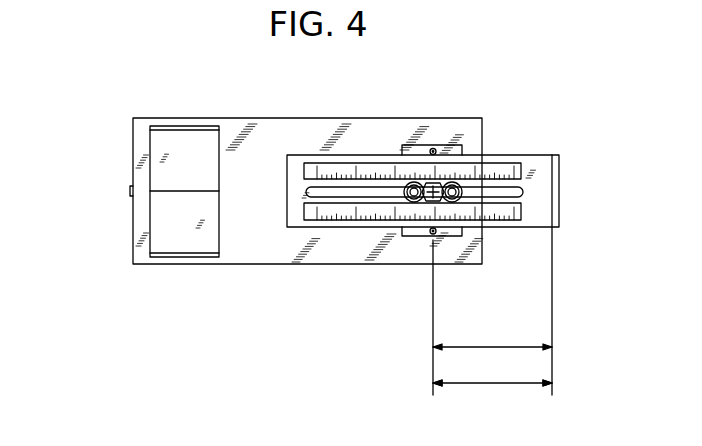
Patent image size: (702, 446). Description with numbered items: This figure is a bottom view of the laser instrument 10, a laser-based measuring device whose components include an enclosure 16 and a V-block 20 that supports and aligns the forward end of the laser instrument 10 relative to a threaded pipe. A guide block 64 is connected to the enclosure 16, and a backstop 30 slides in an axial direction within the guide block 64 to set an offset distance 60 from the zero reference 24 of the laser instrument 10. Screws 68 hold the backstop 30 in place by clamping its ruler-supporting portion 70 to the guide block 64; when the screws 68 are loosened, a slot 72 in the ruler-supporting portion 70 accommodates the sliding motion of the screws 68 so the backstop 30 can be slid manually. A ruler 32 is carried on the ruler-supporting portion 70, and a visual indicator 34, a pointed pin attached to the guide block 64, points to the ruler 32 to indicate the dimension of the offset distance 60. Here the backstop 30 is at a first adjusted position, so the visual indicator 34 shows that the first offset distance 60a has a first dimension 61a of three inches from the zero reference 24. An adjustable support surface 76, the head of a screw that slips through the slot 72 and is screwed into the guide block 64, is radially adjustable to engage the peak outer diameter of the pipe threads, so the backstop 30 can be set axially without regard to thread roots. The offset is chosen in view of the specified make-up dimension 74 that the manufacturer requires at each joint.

The laser instrument 10 is at (120, 84).
The enclosure 16 is at (302, 265).
The V-block 20 is at (219, 229).
The zero reference 24 is at (437, 201).
The backstop 30 is at (552, 207).
The ruler 32 is at (370, 163).
The visual indicator 34 is at (437, 151).
The offset distance 60 is at (495, 386).
The first offset distance 60a is at (457, 386).
The first dimension 61a is at (522, 386).
The guide block 64 is at (422, 238).
The screws 68 is at (409, 201).
The ruler-supporting portion 70 is at (324, 155).
The slot 72 is at (308, 192).
The specified make-up dimension 74 is at (500, 345).
The adjustable support surface 76 is at (440, 184).